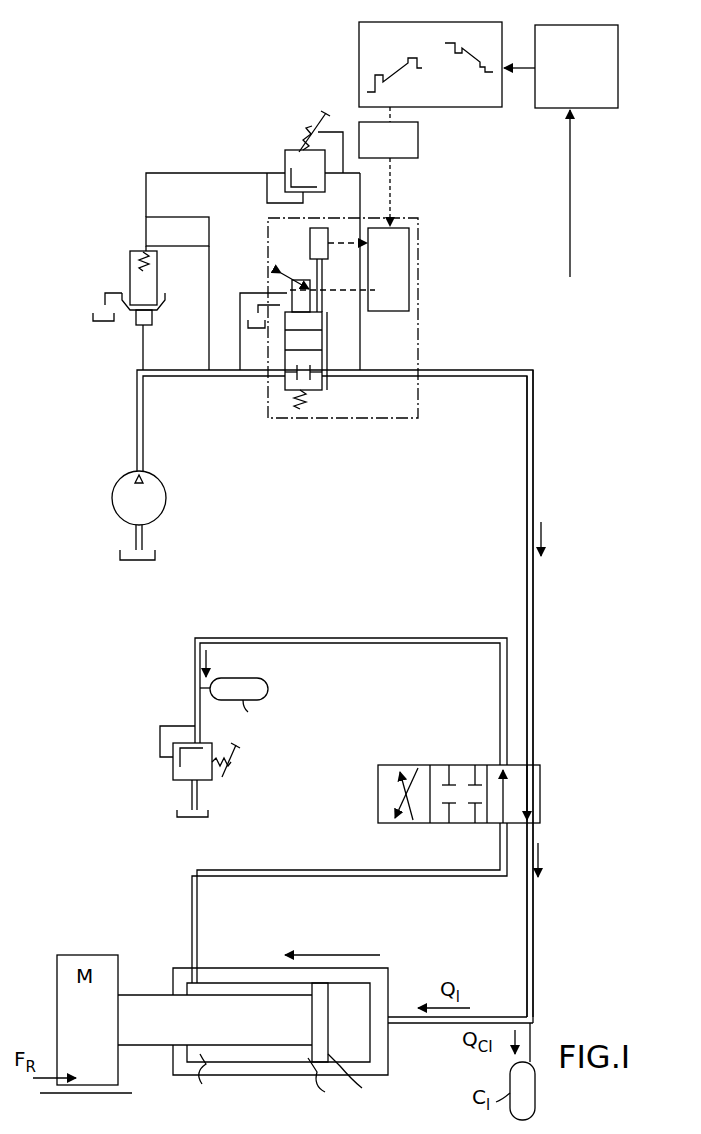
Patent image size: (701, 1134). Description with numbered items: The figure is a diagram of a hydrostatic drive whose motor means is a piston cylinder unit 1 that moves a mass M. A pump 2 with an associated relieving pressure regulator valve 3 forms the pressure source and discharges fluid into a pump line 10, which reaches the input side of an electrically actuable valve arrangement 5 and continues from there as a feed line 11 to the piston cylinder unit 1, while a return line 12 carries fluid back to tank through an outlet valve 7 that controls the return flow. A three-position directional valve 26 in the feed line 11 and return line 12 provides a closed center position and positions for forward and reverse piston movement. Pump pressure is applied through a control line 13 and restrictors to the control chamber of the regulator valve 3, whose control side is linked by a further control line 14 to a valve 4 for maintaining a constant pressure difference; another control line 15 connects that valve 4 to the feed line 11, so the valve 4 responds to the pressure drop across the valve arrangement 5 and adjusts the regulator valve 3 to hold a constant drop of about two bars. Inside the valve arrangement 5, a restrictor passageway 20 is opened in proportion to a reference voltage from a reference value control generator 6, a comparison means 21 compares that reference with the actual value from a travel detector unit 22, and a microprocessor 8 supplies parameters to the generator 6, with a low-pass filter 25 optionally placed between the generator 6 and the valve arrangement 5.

The piston cylinder unit 1 is at (215, 968).
The pump 2 is at (113, 492).
The relieving pressure regulator valve 3 is at (130, 271).
The valve for maintaining a constant pressure difference 4 is at (289, 150).
The electrically actuable valve arrangement 5 is at (418, 285).
The reference value control generator 6 is at (359, 46).
The outlet valve 7 is at (228, 777).
The microprocessor 8 is at (540, 28).
The pump line 10 is at (147, 436).
The feed line 11 is at (533, 455).
The return line 12 is at (195, 656).
The control line 13 is at (209, 280).
The further control line 14 is at (202, 173).
The control line 15 is at (350, 190).
The restrictor passageway 20 is at (315, 332).
The reference value-actual value comparison means 21 is at (349, 269).
The travel detector unit 22 is at (310, 235).
The low-pass filter 25 is at (418, 141).
The directional valve 26 is at (542, 782).